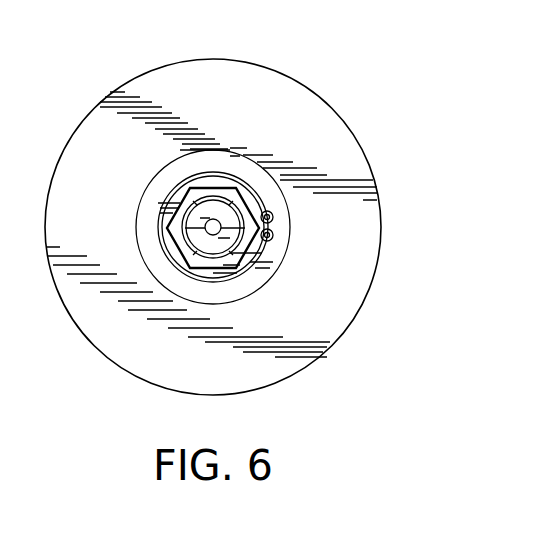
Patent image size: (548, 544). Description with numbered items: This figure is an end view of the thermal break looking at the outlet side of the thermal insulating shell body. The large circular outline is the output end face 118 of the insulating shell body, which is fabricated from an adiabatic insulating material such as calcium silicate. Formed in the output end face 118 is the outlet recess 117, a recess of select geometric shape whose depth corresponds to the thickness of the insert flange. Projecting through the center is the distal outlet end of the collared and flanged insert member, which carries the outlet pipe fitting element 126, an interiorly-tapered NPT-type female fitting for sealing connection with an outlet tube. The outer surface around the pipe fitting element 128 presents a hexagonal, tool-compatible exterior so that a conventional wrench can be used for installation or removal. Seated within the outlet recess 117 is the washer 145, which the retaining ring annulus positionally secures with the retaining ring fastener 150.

The recess 117 is at (150, 198).
The output end face 118 is at (113, 327).
The washer 145 is at (178, 186).
The outlet pipe fitting element 126 is at (233, 187).
The pipe fitting element 128 is at (248, 248).
The retaining ring fastener 150 is at (274, 236).